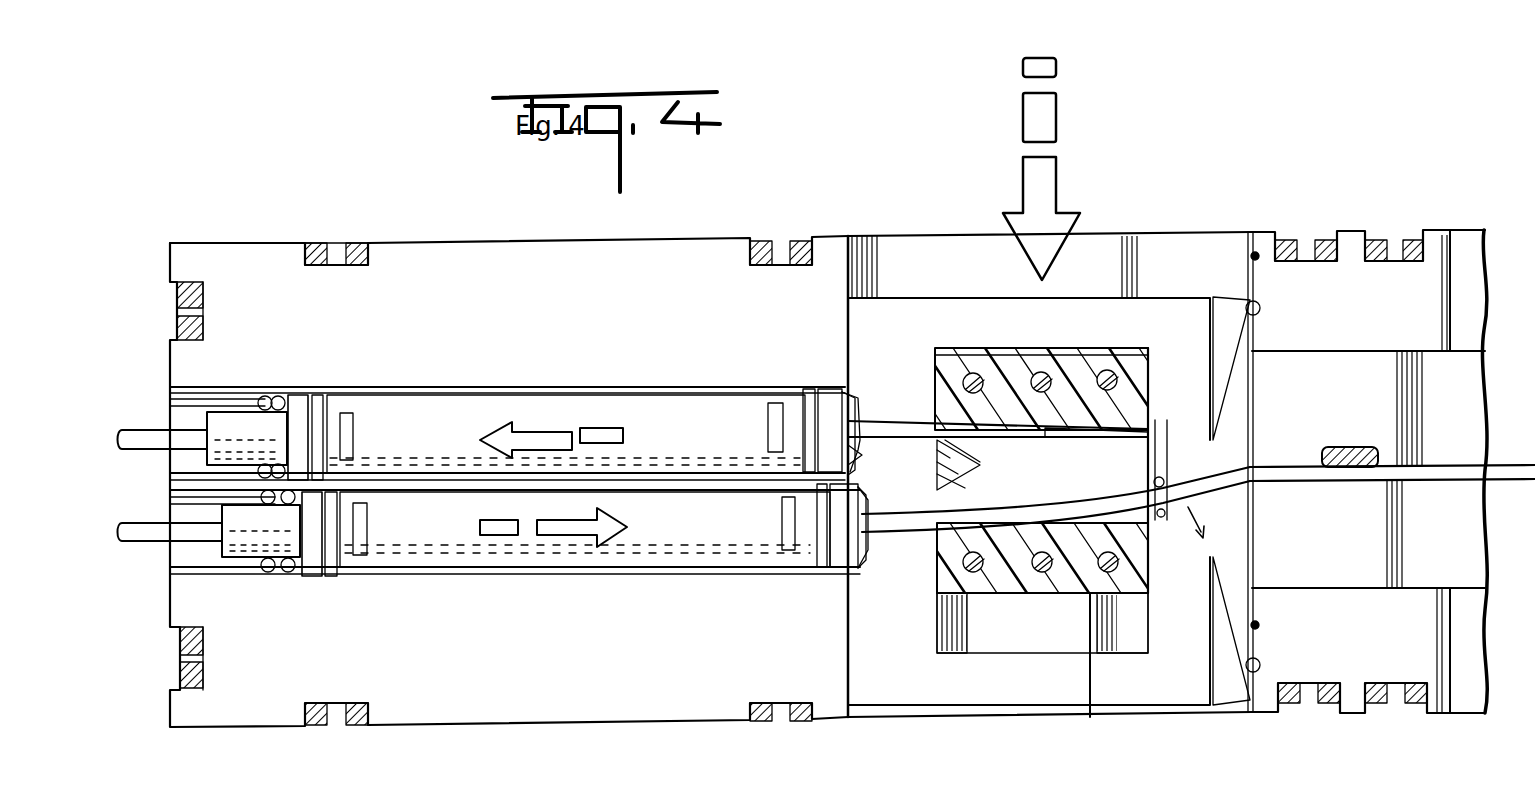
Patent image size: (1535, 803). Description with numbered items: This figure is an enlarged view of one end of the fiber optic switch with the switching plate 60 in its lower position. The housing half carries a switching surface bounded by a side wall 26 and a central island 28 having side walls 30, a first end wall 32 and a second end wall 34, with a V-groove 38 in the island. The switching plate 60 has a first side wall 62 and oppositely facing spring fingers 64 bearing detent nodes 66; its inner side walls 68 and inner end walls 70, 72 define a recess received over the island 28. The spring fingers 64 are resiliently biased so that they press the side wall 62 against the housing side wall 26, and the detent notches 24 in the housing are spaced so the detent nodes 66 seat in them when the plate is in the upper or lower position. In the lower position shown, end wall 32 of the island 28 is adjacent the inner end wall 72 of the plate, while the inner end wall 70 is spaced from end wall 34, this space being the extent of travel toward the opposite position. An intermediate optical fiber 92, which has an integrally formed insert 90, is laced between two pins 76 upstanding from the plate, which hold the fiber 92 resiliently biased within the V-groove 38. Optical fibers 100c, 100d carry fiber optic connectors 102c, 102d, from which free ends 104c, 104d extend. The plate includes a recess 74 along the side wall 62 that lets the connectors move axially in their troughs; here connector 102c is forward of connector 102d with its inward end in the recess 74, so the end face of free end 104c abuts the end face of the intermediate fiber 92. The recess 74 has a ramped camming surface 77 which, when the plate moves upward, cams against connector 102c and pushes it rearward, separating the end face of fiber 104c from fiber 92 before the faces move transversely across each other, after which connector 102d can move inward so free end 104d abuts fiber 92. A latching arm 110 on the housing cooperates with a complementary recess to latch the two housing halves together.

The detent notches 24 is at (1257, 262).
The side wall 26 is at (850, 255).
The island 28 is at (1090, 717).
The side walls 30 is at (935, 550).
The first end wall 32 is at (1025, 352).
The second end wall 34 is at (1006, 598).
The V-groove 38 is at (1075, 520).
The switching plate 60 is at (945, 690).
The first side wall 62 is at (838, 325).
The spring fingers 64 is at (1238, 392).
The detent nodes 66 is at (1258, 312).
The inner side walls 68 is at (937, 648).
The inner end wall 70 is at (1045, 660).
The inner end wall 72 is at (1132, 362).
The recess 74 is at (862, 460).
The pins 76 is at (1181, 470).
The ramped surface 77 is at (836, 392).
The insert 90 is at (1352, 445).
The intermediate optical fiber 92 is at (1232, 475).
The optical fiber 100c is at (190, 540).
The optical fiber 100d is at (186, 440).
The fiber optic connector 102c is at (637, 558).
The fiber optic connector 102d is at (557, 405).
The free end of optical fiber 104c is at (1010, 512).
The free end of optical fiber 104d is at (906, 418).
The latching arm 110 is at (314, 255).